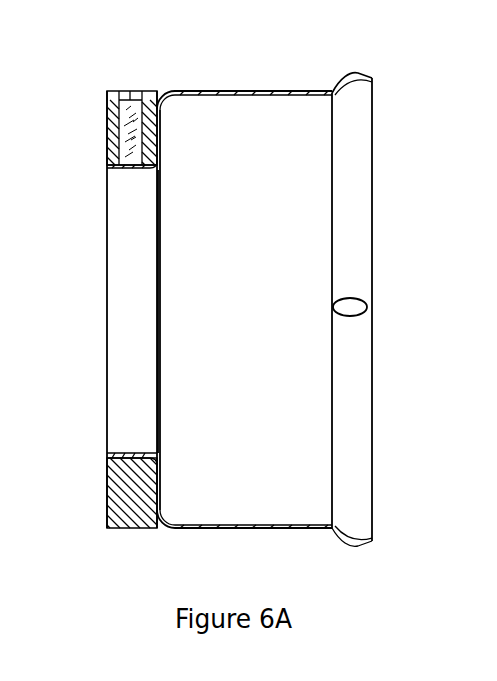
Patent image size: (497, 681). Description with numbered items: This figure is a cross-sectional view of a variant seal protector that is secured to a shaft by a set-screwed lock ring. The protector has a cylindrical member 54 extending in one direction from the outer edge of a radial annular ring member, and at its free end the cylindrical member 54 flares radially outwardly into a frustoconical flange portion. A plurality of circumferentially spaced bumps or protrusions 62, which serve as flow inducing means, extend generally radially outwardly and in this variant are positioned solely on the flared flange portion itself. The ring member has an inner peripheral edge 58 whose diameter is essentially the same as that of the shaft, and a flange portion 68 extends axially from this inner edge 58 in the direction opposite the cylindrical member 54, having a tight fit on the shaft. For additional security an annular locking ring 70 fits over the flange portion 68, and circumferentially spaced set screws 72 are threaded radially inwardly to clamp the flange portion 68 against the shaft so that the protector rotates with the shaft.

The cylindrical member 54 is at (278, 92).
The inner peripheral edge 58 is at (157, 452).
The protrusions 62 is at (352, 72).
The flange portion 68 is at (130, 168).
The locking ring 70 is at (132, 476).
The set screws 72 is at (127, 130).